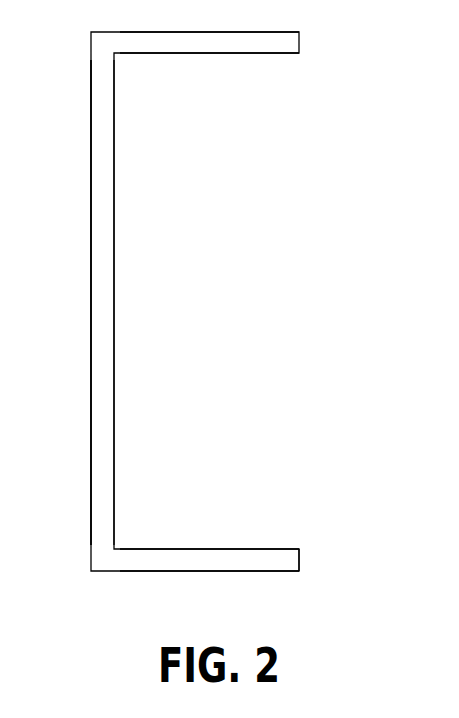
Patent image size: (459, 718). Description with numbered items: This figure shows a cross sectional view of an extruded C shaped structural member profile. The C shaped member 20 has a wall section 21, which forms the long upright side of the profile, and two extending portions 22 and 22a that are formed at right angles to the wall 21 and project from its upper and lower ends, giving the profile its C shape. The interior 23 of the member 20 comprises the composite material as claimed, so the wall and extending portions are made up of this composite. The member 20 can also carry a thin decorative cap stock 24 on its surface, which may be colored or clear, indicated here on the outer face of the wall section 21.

The C shaped member 20 is at (374, 198).
The wall section 21 is at (114, 368).
The extending portion 22 is at (245, 549).
The extending portion 22a is at (213, 53).
The interior 23 is at (212, 557).
The decorative cap stock 24 is at (91, 425).